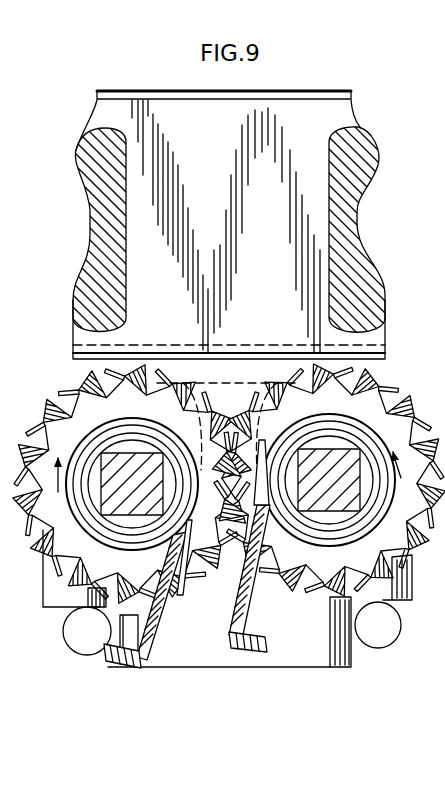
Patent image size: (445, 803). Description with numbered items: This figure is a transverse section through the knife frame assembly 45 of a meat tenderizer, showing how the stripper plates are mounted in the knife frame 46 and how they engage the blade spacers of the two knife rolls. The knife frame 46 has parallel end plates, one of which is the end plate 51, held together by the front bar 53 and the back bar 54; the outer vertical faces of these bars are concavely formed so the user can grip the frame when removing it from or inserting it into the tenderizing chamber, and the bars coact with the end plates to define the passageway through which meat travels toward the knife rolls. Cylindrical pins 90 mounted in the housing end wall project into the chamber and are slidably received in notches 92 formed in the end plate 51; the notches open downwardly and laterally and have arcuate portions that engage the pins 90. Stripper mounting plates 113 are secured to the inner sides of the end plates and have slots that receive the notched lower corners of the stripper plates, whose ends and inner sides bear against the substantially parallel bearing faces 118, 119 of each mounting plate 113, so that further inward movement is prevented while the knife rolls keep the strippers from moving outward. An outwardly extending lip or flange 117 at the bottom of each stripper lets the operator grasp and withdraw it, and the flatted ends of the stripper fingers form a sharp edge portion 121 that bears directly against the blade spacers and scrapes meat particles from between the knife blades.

The knife frame assembly 45 is at (354, 80).
The knife frame 46 is at (356, 112).
The end plate 51 is at (251, 108).
The front bar 53 is at (103, 240).
The back bar 54 is at (373, 150).
The pins 90 is at (67, 652).
The notches 92 is at (105, 597).
The stripper mounting plates 113 is at (280, 666).
The lip or flange 117 is at (108, 662).
The bearing face 118 is at (160, 610).
The bearing face 119 is at (242, 572).
The sharp edge portion 121 is at (179, 589).